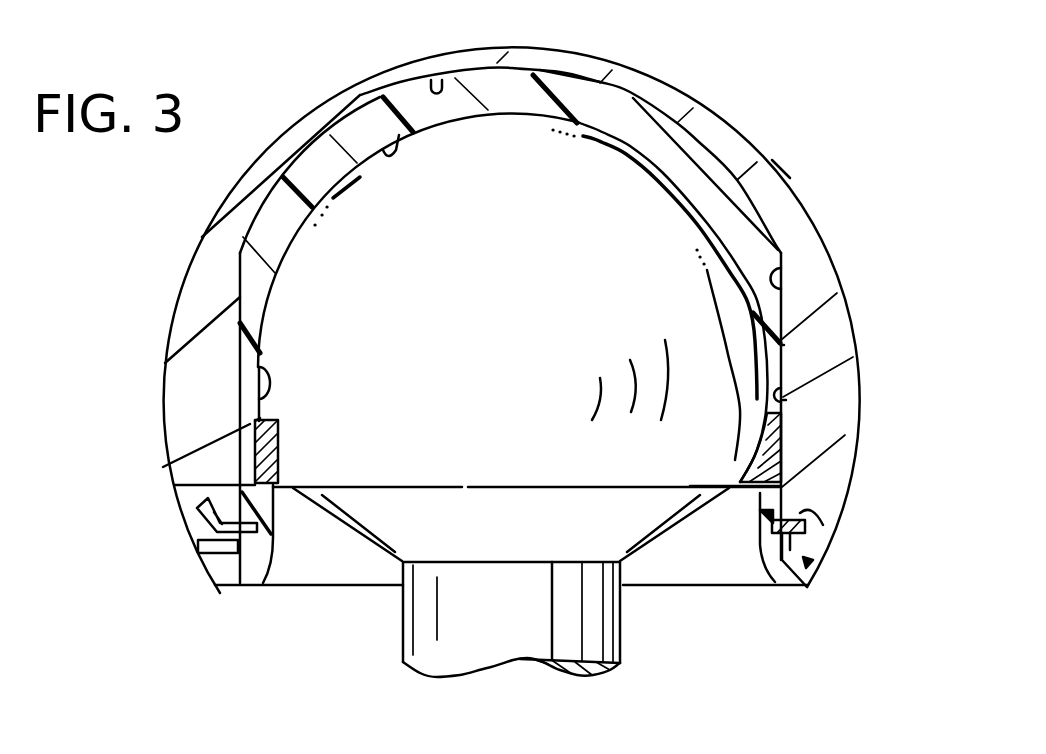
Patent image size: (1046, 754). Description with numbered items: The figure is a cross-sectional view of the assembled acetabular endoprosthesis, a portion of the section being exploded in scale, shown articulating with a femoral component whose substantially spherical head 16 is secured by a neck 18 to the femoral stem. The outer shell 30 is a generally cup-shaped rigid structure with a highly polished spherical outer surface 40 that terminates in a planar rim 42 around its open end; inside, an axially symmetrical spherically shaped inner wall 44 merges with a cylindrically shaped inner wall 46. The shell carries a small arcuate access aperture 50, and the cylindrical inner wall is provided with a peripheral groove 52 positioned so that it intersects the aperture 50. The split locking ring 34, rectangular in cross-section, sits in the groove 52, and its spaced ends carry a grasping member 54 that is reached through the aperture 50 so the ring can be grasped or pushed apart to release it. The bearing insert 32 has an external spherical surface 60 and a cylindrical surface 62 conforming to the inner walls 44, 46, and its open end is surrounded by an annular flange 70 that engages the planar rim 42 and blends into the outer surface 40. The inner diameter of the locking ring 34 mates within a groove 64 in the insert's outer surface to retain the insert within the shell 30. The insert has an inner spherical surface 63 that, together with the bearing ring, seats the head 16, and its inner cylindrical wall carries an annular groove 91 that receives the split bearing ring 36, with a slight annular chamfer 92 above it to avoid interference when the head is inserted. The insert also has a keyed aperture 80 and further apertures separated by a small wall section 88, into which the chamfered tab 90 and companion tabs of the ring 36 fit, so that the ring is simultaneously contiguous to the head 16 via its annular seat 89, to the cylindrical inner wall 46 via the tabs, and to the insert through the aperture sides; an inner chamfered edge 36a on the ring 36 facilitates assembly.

The head 16 is at (545, 336).
The neck 18 is at (403, 615).
The outer shell 30 is at (790, 160).
The bearing insert 32 is at (700, 155).
The locking ring 34 is at (823, 525).
The bearing ring 36 is at (785, 437).
The inner chamfered edge 36a is at (773, 467).
The spherical outer surface 40 is at (182, 280).
The planar rim 42 is at (215, 585).
The spherically shaped inner wall 44 is at (437, 80).
The cylindrically shaped inner wall 46 is at (782, 267).
The access aperture 50 is at (193, 498).
The peripheral groove 52 is at (273, 538).
The grasping member 54 is at (203, 548).
The external spherical surface 60 is at (563, 71).
The cylindrical surface 62 is at (784, 360).
The inner spherical surface 63 is at (383, 150).
The groove 64 is at (790, 550).
The annular flange 70 is at (810, 587).
The keyed aperture 80 is at (787, 399).
The small section 88 is at (253, 452).
The annular seat 89 is at (280, 460).
The tab 90 is at (785, 487).
The annular groove 91 is at (255, 421).
The annular chamfer 92 is at (259, 367).